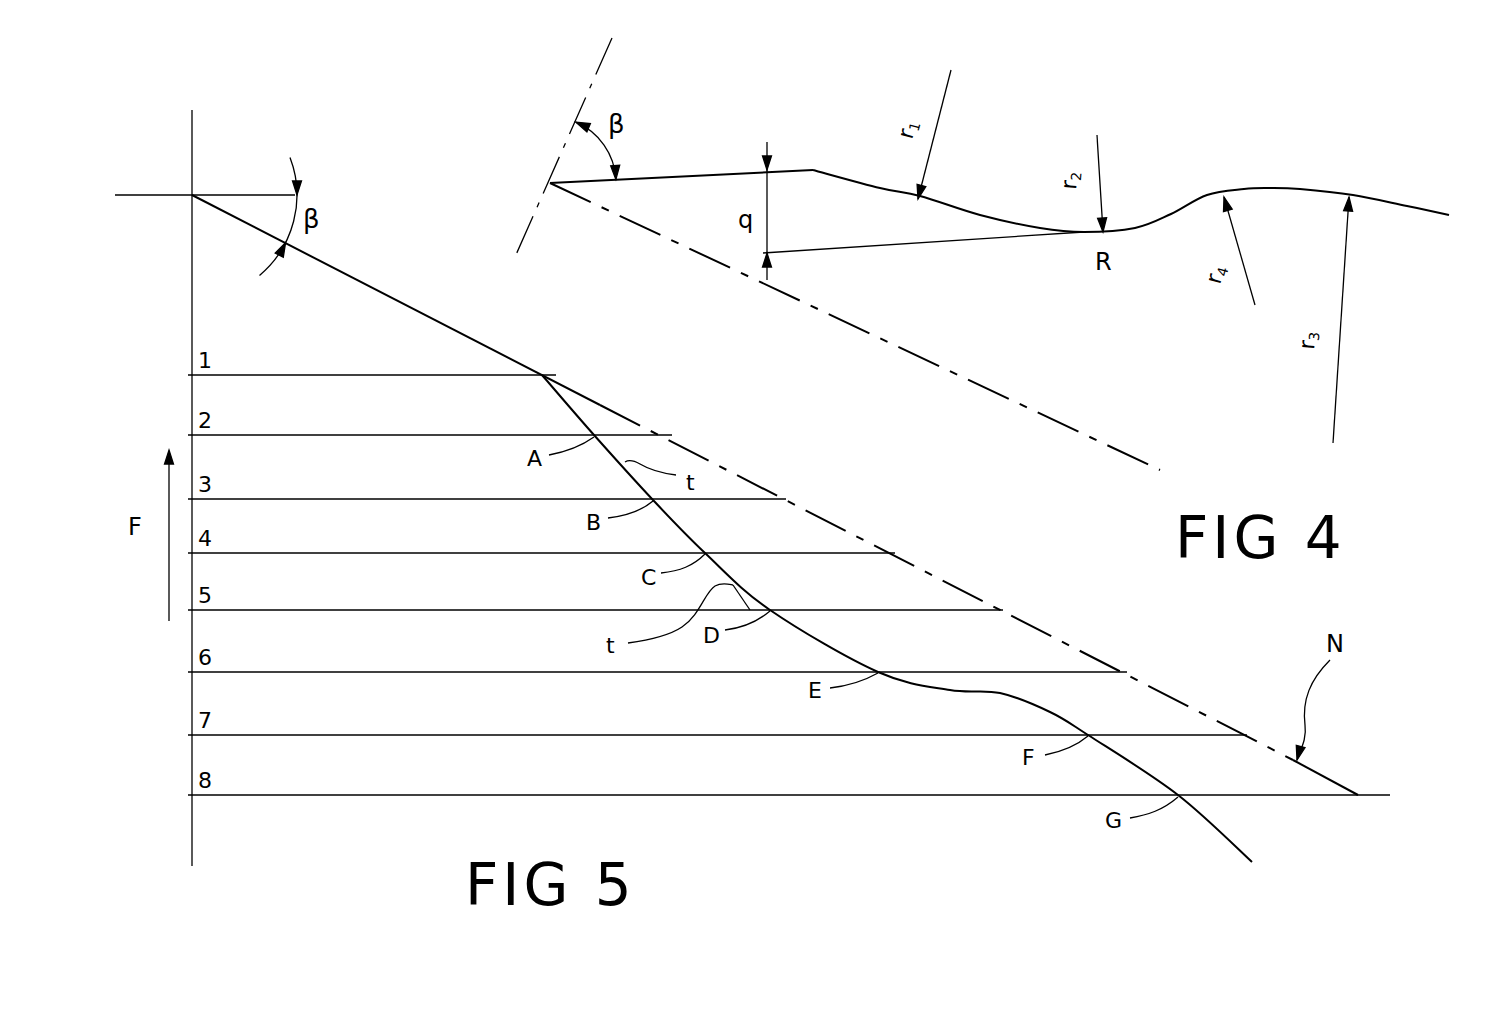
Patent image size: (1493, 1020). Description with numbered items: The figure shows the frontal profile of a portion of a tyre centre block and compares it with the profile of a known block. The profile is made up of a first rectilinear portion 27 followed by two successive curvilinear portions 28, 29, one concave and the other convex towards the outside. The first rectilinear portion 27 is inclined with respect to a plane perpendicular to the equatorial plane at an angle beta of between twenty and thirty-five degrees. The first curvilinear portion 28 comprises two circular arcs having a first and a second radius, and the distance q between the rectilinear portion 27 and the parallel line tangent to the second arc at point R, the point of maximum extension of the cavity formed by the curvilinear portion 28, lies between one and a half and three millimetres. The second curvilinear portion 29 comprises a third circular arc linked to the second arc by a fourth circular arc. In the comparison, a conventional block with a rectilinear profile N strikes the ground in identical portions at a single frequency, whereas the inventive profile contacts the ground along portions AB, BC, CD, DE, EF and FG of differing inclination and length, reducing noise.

In FIG. 4, the first rectilinear portion 27 is at (680, 160).
In FIG. 5, the first rectilinear portion 27 is at (377, 287).
In FIG. 4, the first curvilinear portion 28 is at (1015, 208).
In FIG. 5, the first curvilinear portion 28 is at (790, 597).
In FIG. 4, the second curvilinear portion 29 is at (1302, 225).
In FIG. 5, the second curvilinear portion 29 is at (978, 765).